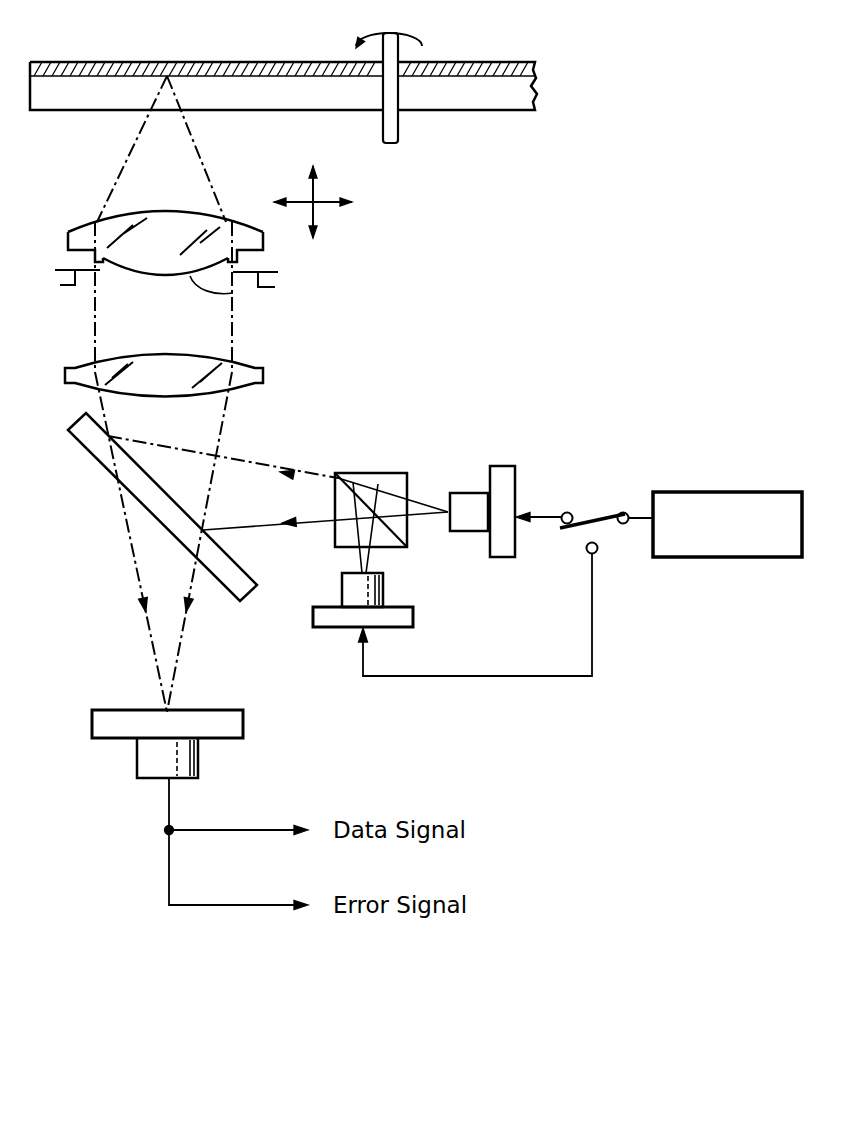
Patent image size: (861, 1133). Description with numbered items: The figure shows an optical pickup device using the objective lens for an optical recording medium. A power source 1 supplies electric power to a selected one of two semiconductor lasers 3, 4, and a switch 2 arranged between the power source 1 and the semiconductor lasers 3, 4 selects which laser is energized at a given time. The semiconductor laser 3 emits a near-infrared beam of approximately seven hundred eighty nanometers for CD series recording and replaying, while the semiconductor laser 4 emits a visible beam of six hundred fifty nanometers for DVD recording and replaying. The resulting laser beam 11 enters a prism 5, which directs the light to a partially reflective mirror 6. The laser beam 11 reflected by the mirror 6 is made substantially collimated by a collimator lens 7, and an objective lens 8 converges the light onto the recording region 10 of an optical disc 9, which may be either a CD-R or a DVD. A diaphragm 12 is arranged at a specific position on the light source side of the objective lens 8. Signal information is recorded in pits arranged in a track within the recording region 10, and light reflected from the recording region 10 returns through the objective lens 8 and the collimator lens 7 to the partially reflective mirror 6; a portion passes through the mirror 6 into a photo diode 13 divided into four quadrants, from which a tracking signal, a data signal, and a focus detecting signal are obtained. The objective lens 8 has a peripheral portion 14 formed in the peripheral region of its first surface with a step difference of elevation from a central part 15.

The power source 1 is at (700, 492).
The switch 2 is at (590, 514).
The semiconductor laser 3 is at (463, 493).
The semiconductor laser 4 is at (385, 592).
The prism 5 is at (356, 478).
The partially reflective mirror 6 is at (93, 442).
The collimator lens 7 is at (264, 376).
The objective lens 8 is at (68, 238).
The optical disc 9 is at (70, 96).
The recording region 10 is at (93, 66).
The laser beam 11 is at (255, 466).
The diaphragm 12 is at (60, 285).
The photo diode 13 is at (228, 710).
The peripheral portion 14 is at (88, 262).
The central part 15 is at (233, 293).